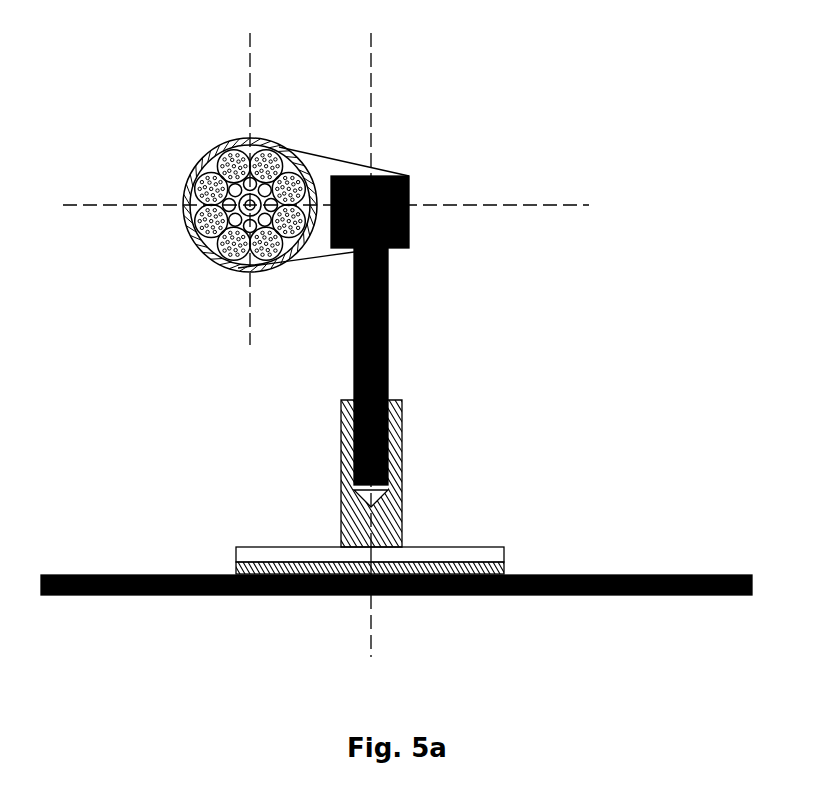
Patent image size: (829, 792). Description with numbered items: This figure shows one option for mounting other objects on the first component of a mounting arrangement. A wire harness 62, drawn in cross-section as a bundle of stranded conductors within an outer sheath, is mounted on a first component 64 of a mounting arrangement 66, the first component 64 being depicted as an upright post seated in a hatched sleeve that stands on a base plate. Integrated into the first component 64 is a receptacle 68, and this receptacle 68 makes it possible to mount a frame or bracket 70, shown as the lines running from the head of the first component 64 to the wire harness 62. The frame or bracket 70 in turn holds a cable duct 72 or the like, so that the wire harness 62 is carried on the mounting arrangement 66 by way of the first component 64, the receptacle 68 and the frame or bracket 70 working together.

The wire harness 62 is at (279, 147).
The first component 64 is at (388, 313).
The mounting arrangement 66 is at (648, 170).
The receptacle 68 is at (345, 252).
The frame or bracket 70 is at (328, 167).
The cable duct 72 is at (218, 148).